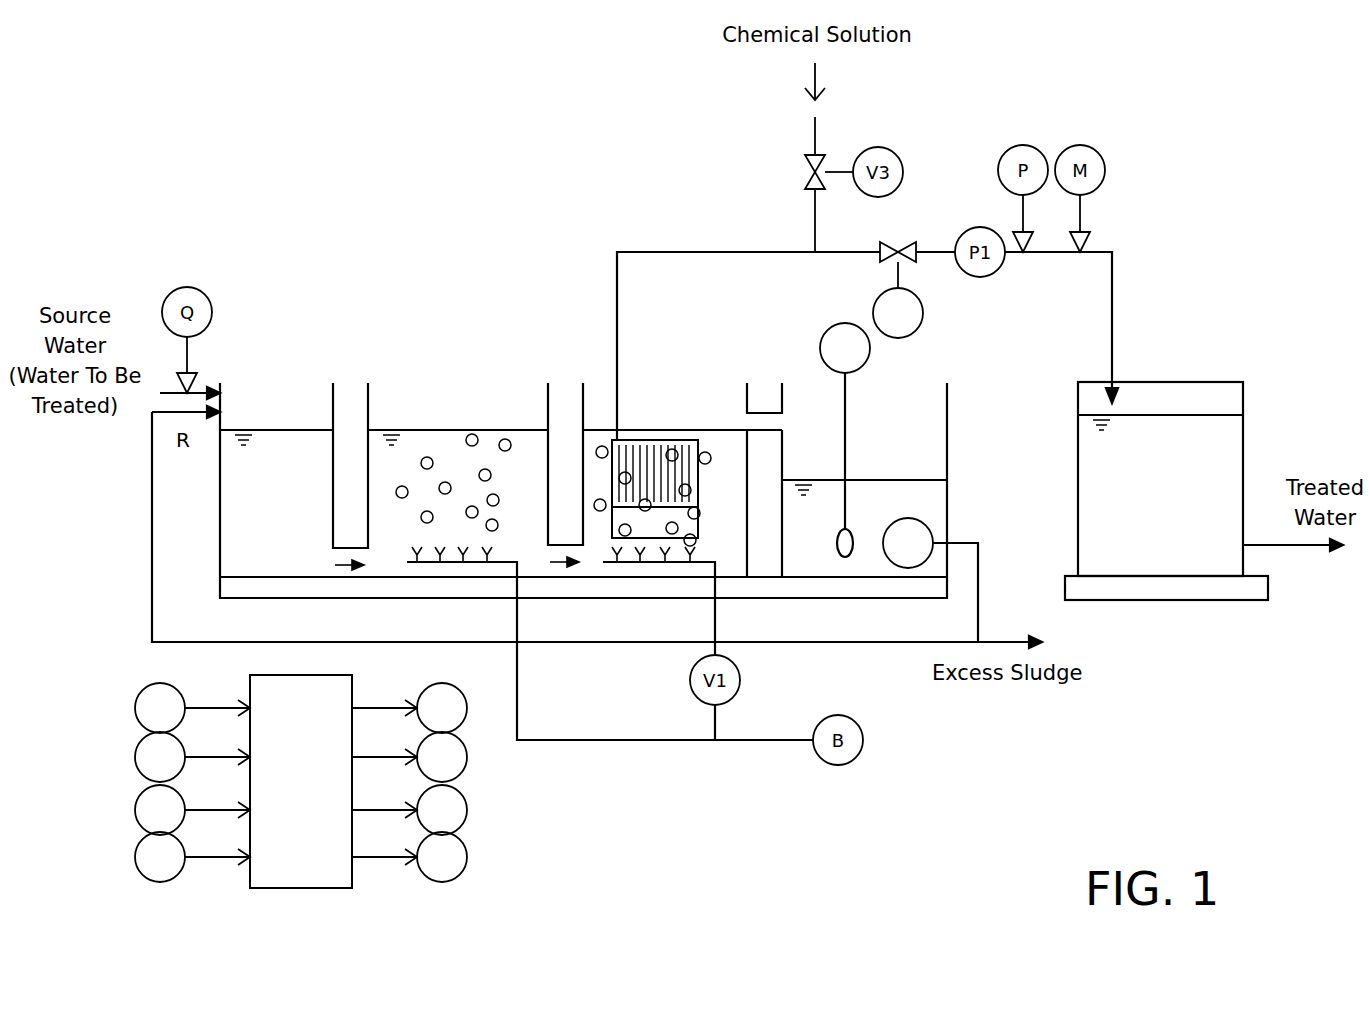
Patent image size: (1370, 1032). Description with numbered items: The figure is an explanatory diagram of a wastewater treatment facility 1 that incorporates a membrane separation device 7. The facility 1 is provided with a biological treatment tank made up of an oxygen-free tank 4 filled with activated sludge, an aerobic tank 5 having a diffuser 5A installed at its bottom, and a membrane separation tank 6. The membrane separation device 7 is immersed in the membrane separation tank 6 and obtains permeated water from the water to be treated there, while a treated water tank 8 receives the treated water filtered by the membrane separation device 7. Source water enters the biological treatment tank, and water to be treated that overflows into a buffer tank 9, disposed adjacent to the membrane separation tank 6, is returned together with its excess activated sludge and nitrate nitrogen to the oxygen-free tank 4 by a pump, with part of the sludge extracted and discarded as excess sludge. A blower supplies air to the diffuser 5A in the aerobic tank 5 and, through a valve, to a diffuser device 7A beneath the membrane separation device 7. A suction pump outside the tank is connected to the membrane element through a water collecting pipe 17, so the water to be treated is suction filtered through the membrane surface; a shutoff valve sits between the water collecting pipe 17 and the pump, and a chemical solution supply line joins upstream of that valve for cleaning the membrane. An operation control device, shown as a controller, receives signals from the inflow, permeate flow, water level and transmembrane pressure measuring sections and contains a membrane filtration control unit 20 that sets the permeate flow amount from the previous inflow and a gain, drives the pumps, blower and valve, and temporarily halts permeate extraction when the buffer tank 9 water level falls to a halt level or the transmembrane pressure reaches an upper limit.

The wastewater treatment facility 1 is at (531, 222).
The oxygen-free tank 4 is at (268, 430).
The aerobic tank 5 is at (435, 430).
The diffuser 5A is at (407, 565).
The membrane separation tank 6 is at (634, 437).
The membrane separation device 7 is at (665, 442).
The diffuser device 7A is at (628, 565).
The treated water tank 8 is at (1210, 395).
The buffer tank 9 is at (884, 487).
The water collecting pipe 17 is at (732, 250).
The membrane filtration control unit 20 is at (301, 800).